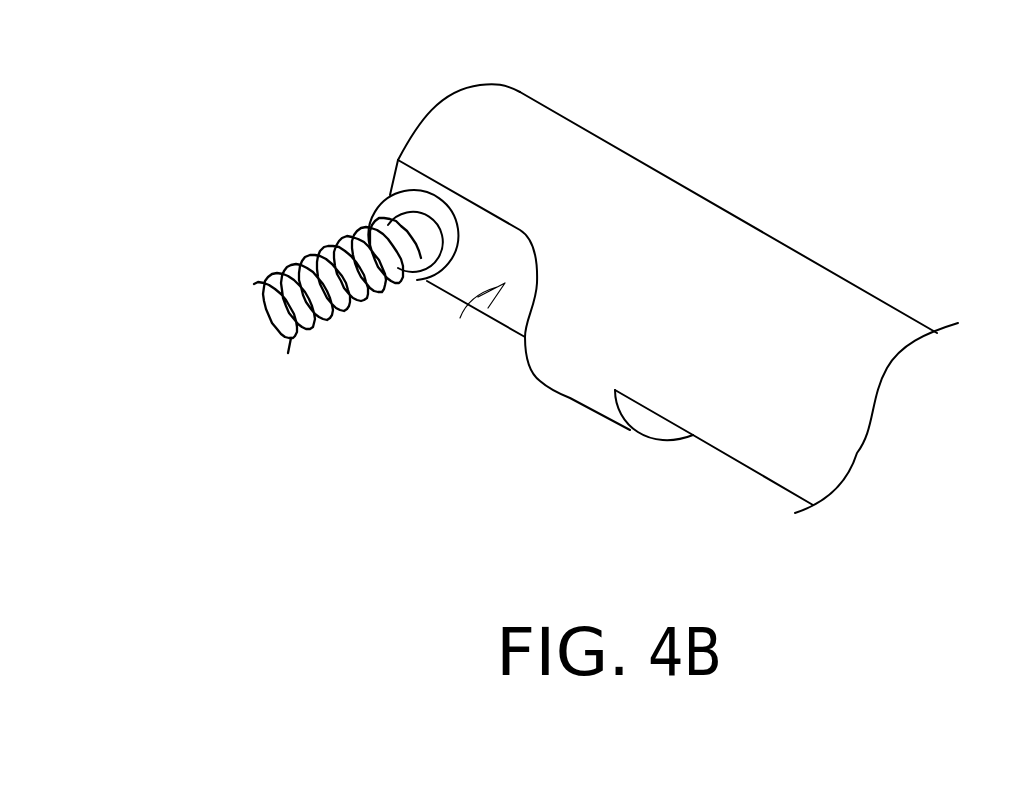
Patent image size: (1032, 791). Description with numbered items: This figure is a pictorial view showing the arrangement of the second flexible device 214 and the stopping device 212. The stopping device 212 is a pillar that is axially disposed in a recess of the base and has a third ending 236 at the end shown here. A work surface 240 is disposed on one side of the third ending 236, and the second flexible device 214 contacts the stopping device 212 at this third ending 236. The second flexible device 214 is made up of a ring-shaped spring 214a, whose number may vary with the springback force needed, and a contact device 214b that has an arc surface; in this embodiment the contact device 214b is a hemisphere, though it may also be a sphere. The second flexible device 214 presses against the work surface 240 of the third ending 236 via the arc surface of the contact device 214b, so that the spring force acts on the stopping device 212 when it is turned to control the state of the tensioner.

The stopping device 212 is at (842, 298).
The third ending 236 is at (452, 96).
The second flexible device 214 is at (137, 133).
The ring-shaped spring 214a is at (273, 273).
The contact device 214b is at (393, 204).
The work surface 240 is at (460, 318).